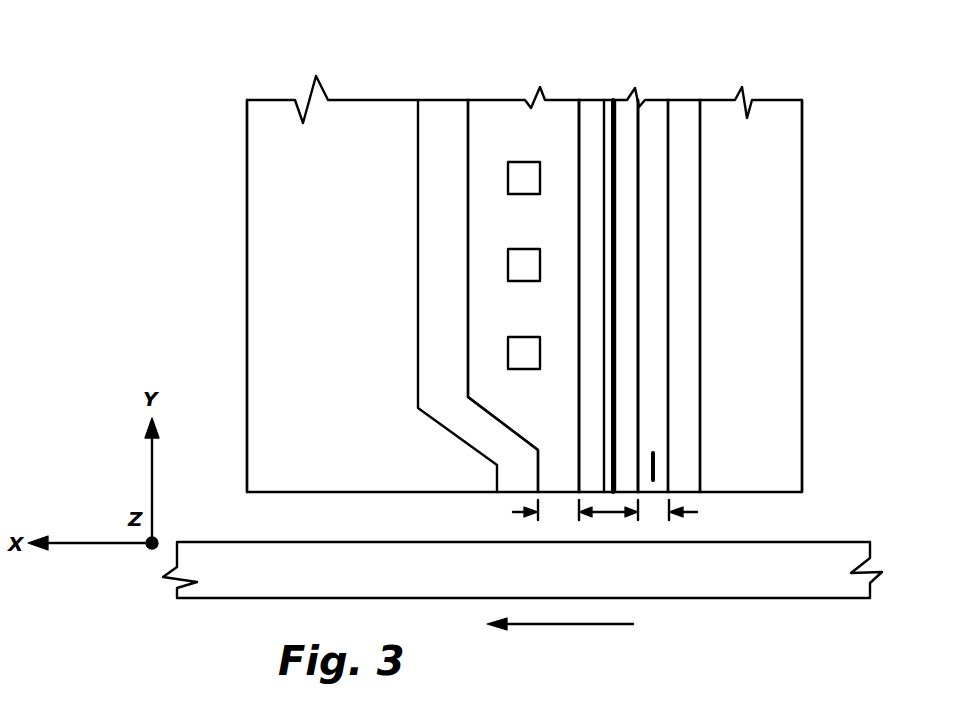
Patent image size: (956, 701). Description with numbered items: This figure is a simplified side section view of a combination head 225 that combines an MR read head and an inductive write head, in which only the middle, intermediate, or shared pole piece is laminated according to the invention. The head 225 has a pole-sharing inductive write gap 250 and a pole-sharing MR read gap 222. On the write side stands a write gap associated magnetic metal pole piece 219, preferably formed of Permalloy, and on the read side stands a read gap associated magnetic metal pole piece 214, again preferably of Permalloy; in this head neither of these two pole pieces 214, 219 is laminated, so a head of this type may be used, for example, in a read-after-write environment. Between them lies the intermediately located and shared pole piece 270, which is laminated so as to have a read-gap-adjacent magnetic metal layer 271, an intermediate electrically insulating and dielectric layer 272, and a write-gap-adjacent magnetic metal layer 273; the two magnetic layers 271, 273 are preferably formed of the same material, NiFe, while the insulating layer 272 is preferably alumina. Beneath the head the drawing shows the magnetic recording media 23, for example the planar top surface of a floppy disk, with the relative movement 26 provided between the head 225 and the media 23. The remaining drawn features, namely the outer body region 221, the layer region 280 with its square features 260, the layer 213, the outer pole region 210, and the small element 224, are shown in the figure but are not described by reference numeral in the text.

The combination head 225 is at (842, 120).
The first shield layer 221 is at (265, 334).
The write gap associated magnetic metal pole piece 219 is at (440, 280).
The insulating layer 280 is at (492, 114).
The conductive vias 260 is at (518, 177).
The intermediate shared pole piece 270 is at (633, 86).
The read-gap-adjacent magnetic metal layer 271 is at (627, 252).
The intermediate electrically insulating and dielectric layer 272 is at (609, 350).
The write-gap-adjacent magnetic metal layer 273 is at (588, 407).
The intermediate layer 213 is at (655, 190).
The read gap associated magnetic metal pole piece 214 is at (683, 118).
The second shield layer 210 is at (732, 258).
The sensing element 224 is at (655, 468).
The pole-sharing inductive write gap 250 is at (513, 512).
The pole-sharing MR read gap 222 is at (697, 513).
The magnetic recording media 23 is at (813, 550).
The relative movement 26 is at (610, 625).